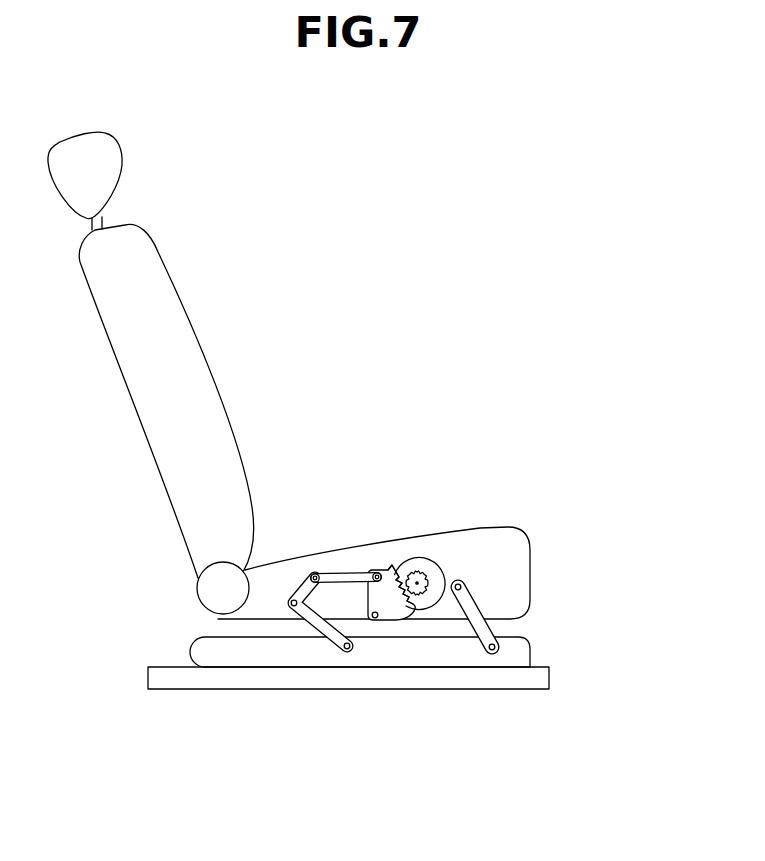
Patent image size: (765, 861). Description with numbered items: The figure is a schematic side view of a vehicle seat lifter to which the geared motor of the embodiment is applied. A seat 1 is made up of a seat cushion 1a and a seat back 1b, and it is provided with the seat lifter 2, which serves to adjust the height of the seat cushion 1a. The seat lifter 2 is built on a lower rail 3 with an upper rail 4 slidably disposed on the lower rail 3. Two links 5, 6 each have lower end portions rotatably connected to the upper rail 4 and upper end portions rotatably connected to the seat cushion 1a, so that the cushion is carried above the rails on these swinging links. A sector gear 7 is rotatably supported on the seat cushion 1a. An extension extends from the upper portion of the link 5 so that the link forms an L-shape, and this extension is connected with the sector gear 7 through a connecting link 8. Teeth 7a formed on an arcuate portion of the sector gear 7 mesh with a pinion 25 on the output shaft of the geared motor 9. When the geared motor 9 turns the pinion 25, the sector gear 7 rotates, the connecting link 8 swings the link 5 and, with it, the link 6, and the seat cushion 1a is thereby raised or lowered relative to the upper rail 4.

The seat 1 is at (289, 375).
The seat cushion 1a is at (408, 545).
The seat back 1b is at (210, 405).
The seat lifter 2 is at (471, 618).
The lower rail 3 is at (158, 675).
The upper rail 4 is at (200, 650).
The link 5 is at (330, 640).
The link 6 is at (478, 627).
The sector gear 7 is at (388, 613).
The teeth 7a is at (395, 570).
The connecting link 8 is at (342, 573).
The geared motor 9 is at (422, 560).
The pinion 25 is at (430, 575).